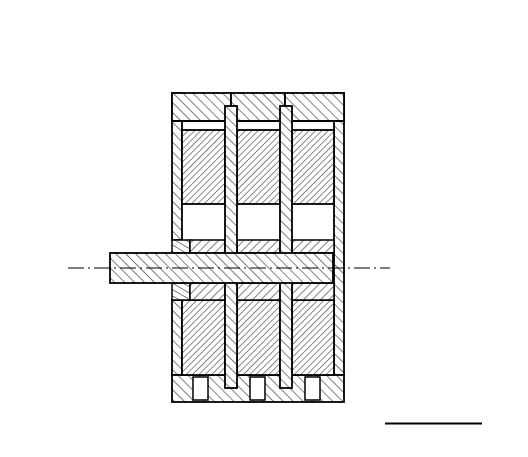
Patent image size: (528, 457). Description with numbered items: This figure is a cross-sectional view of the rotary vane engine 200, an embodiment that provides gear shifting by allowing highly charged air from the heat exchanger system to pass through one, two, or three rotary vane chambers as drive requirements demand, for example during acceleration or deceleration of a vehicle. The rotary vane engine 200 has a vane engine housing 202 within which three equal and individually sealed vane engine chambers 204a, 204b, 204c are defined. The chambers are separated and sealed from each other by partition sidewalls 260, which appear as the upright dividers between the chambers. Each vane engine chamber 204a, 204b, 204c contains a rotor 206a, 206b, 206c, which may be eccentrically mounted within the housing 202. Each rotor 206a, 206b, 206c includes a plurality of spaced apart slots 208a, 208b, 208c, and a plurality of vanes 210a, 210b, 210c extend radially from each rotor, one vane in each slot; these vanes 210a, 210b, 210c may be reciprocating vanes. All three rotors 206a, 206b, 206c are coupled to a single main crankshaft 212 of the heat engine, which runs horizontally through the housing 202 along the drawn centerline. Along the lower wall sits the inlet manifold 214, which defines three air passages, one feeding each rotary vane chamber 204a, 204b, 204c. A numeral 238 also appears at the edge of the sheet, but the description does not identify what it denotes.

The rotary vane engine 200 is at (134, 72).
The vane engine housing 202 is at (172, 107).
The vane engine chamber 204a is at (180, 88).
The vane engine chamber 204b is at (248, 85).
The vane engine chamber 204c is at (307, 82).
The rotor 206a is at (205, 239).
The rotor 206b is at (262, 240).
The rotor 206c is at (324, 250).
The slot 208a is at (186, 151).
The slot 208b is at (258, 138).
The slot 208c is at (318, 164).
The vane 210a is at (195, 170).
The vane 210b is at (258, 162).
The vane 210c is at (317, 177).
The main crankshaft 212 is at (145, 284).
The inlet manifold 214 is at (170, 386).
The component (adjacent figure) 238 is at (460, 456).
The partition sidewall 260 is at (232, 107).